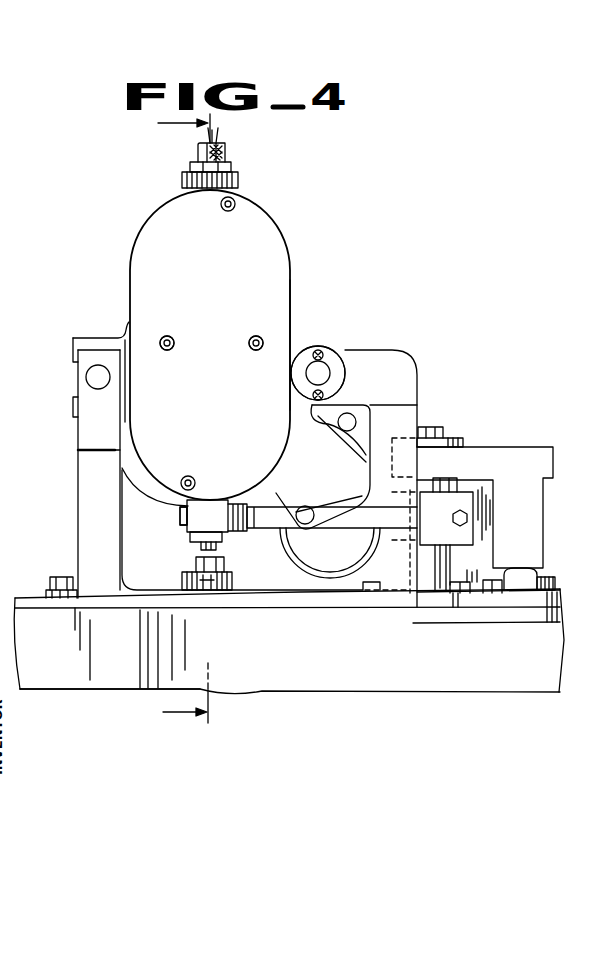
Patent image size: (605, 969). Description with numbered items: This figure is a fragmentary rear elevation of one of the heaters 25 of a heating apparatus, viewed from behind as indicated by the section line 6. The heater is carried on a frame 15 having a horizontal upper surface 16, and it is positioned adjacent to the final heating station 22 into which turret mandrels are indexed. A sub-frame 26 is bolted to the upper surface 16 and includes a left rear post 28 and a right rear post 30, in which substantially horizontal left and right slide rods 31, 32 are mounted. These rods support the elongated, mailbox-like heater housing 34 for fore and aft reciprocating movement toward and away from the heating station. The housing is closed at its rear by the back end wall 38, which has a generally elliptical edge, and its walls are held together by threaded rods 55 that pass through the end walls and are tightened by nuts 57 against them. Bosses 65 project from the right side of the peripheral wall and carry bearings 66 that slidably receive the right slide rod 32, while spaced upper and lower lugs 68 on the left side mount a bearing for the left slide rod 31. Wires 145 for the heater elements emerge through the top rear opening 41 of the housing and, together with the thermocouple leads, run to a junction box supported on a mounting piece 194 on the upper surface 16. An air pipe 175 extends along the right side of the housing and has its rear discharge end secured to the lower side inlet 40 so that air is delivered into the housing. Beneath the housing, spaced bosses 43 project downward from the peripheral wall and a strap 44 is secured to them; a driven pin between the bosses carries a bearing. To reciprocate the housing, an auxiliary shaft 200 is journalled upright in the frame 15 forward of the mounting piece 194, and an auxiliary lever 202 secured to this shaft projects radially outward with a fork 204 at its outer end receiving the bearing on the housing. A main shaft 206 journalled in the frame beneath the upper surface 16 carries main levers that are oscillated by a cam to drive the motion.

The section line 6- 6 is at (197, 418).
The frame 15 is at (383, 696).
The upper surface 16 is at (36, 598).
The final heating station 22 is at (461, 418).
The heater 25 is at (297, 231).
The sub-frame 26 is at (250, 608).
The left rear post 28 is at (92, 432).
The right rear post 30 is at (392, 367).
The left slide rod 31 is at (92, 377).
The right slide rod 32 is at (326, 366).
The heater housing 34 is at (298, 299).
The back end wall 38 is at (236, 264).
The lower side inlet 40 is at (345, 481).
The top rear opening 41 is at (236, 173).
The bosses 43 is at (217, 510).
The strap 44 is at (198, 547).
The threaded rods 55 is at (253, 350).
The nuts 57 is at (253, 337).
The bosses 65 is at (322, 351).
The bearings 66 is at (333, 387).
The lugs 68 is at (95, 343).
The wires 145 is at (224, 141).
The air pipe 175 is at (320, 556).
The mounting piece 194 is at (519, 584).
The auxiliary shaft 200 is at (429, 588).
The auxiliary lever 202 is at (266, 525).
The fork 204 is at (186, 514).
The main shaft 206 is at (197, 580).